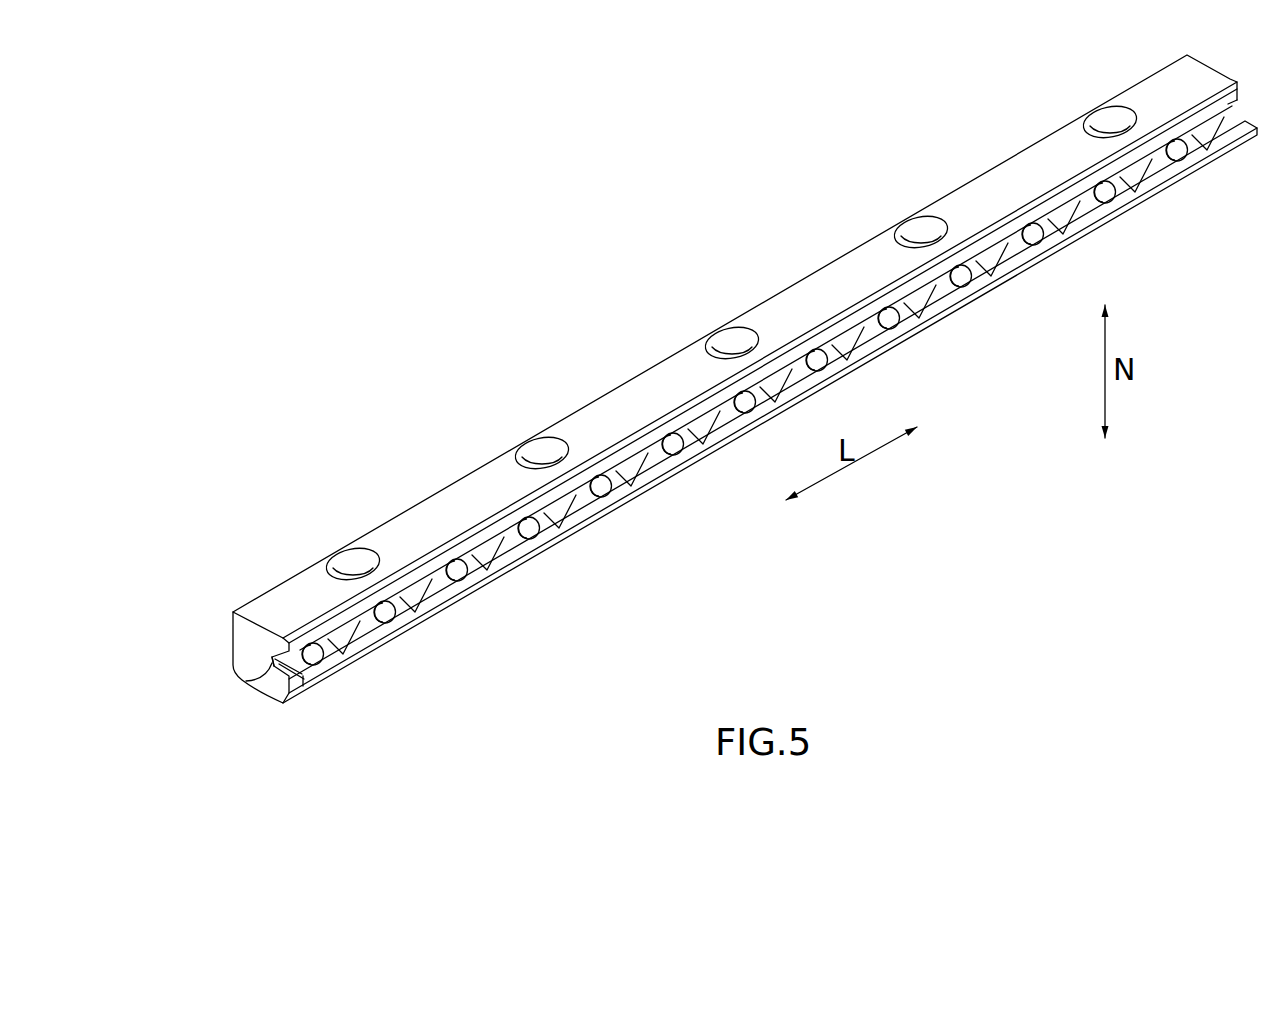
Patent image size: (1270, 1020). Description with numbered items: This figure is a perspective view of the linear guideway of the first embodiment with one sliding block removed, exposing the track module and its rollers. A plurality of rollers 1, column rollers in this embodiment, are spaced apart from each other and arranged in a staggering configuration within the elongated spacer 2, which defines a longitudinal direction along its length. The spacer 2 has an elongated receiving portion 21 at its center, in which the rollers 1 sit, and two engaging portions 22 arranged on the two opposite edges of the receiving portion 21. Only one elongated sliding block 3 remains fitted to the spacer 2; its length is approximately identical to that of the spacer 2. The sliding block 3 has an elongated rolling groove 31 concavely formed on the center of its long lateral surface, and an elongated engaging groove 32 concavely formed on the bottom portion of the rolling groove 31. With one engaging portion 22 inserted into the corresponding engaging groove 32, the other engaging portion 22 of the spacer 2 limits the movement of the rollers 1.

The roller 1 is at (493, 556).
The spacer 2 is at (691, 430).
The receiving portion 21 is at (440, 588).
The engaging portion 22 is at (258, 683).
The sliding block 3 is at (597, 404).
The rolling groove 31 is at (281, 696).
The engaging groove 32 is at (261, 645).